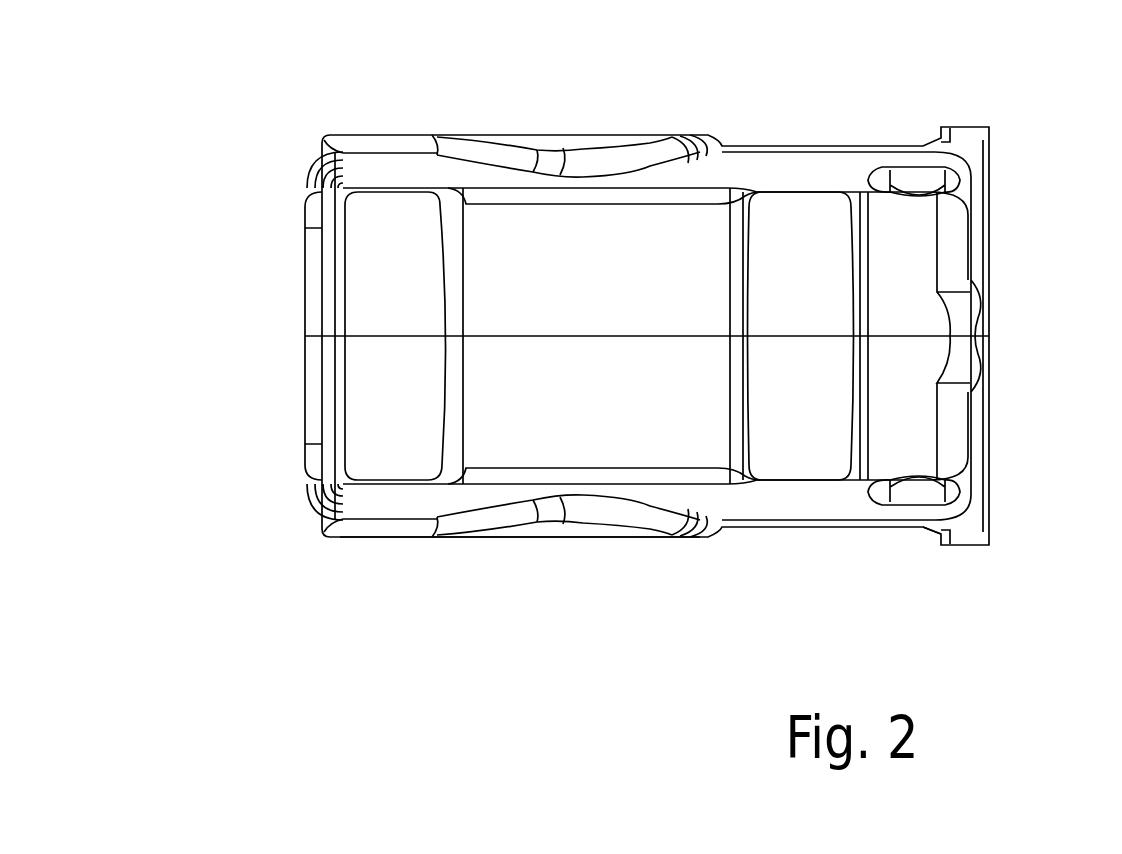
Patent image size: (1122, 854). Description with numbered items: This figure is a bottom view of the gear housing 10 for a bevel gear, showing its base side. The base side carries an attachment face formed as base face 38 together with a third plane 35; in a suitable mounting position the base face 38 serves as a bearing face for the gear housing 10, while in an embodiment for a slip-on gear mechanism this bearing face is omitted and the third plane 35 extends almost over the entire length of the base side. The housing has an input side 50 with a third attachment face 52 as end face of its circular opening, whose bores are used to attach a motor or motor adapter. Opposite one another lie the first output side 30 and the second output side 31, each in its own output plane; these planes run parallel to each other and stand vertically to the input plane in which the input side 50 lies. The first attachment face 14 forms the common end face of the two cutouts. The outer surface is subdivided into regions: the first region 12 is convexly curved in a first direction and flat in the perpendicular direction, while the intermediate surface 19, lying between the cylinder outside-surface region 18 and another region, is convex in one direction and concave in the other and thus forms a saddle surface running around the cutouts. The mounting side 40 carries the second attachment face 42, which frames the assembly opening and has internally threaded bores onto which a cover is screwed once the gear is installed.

The gear housing 10 is at (1019, 132).
The first region 12 is at (815, 500).
The first attachment face 14 is at (633, 543).
The cylinder outside-surface region 18 is at (975, 535).
The intermediate surface 19 is at (470, 523).
The first output side 30 is at (583, 119).
The second output side 31 is at (500, 582).
The third plane 35 is at (592, 424).
The base face 38 is at (392, 420).
The mounting side 40 is at (284, 336).
The second attachment face 42 is at (305, 420).
The input side 50 is at (1018, 336).
The third attachment face 52 is at (990, 534).